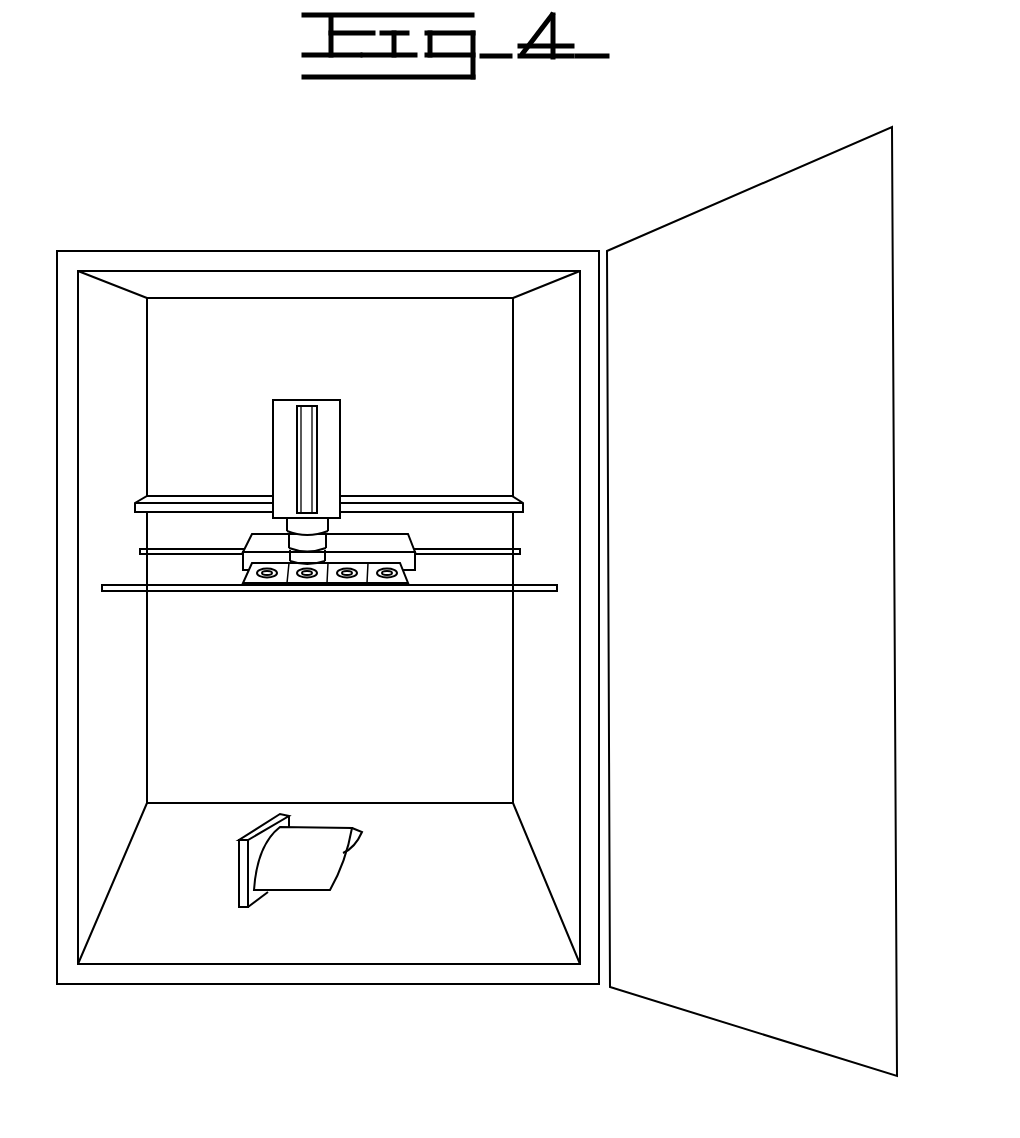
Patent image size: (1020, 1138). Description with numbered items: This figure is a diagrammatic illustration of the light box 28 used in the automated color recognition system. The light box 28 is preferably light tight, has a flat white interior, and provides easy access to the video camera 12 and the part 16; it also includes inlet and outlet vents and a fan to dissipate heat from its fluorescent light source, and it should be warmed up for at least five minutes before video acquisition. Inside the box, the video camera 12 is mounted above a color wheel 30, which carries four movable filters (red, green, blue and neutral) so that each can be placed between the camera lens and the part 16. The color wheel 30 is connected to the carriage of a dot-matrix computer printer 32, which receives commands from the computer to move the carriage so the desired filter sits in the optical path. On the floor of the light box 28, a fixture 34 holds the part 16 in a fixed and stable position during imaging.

The light box 28 is at (466, 251).
The video camera 12 is at (340, 428).
The dot-matrix computer printer 32 is at (413, 540).
The color wheel 30 is at (241, 576).
The fixture 34 is at (239, 871).
The part 16 is at (343, 853).